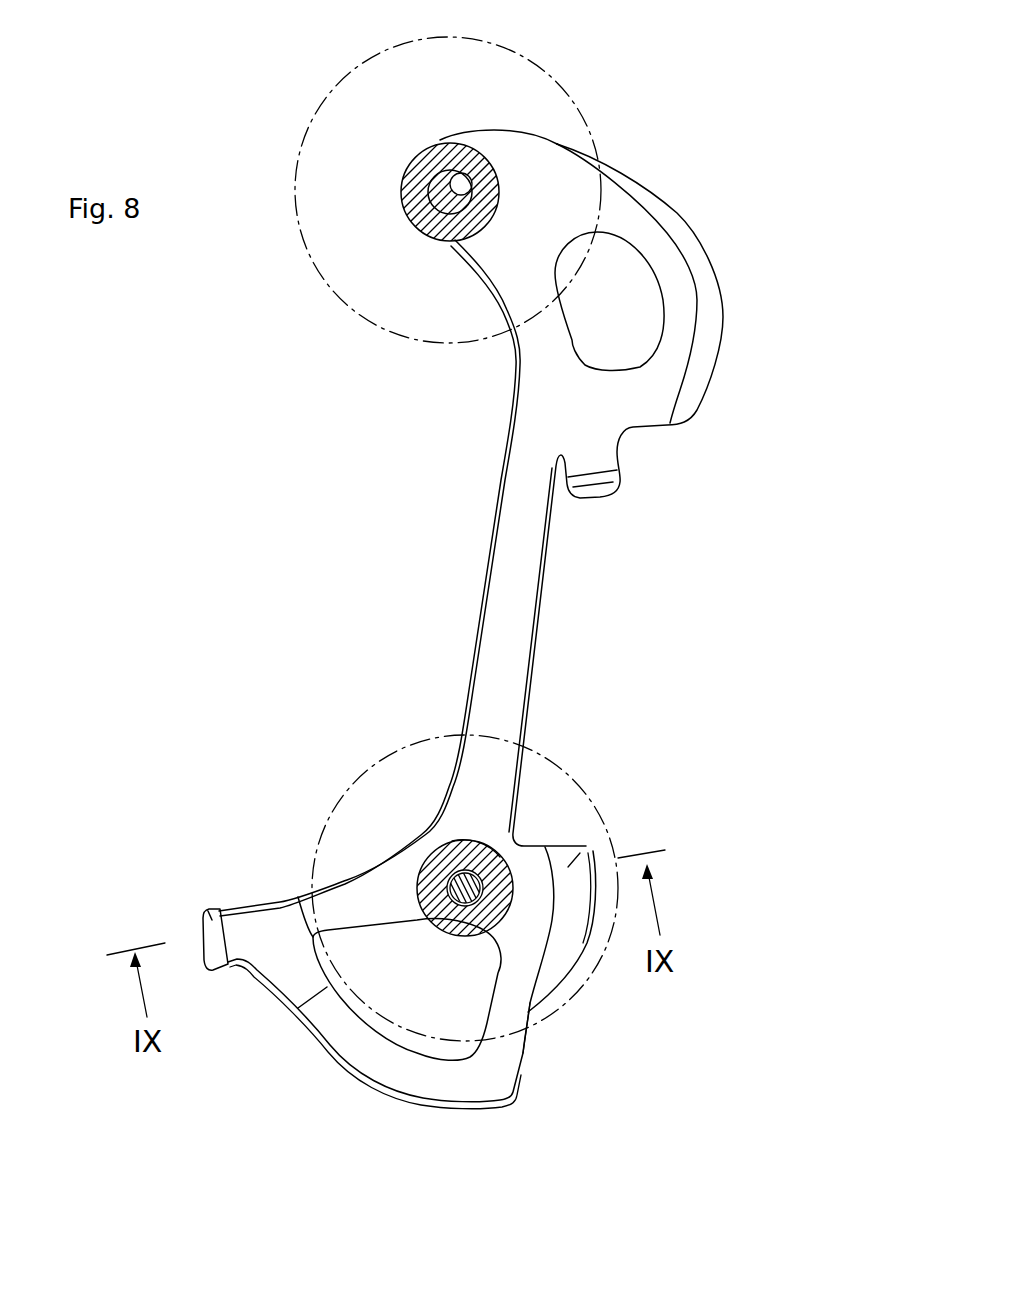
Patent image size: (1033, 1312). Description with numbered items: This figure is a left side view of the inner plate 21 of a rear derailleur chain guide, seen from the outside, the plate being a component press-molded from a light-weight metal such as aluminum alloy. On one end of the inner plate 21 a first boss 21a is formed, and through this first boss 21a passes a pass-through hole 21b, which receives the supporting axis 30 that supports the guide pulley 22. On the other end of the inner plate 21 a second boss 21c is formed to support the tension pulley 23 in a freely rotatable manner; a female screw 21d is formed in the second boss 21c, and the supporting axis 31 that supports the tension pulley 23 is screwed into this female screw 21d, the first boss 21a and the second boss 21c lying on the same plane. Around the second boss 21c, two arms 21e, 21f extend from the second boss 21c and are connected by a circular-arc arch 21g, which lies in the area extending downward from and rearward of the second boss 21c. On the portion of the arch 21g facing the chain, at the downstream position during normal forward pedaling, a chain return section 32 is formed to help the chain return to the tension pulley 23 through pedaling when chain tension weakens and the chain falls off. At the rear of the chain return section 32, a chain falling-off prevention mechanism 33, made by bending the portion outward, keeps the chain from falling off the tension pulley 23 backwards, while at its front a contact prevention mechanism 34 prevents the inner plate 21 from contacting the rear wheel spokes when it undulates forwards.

The inner plate 21 is at (578, 628).
The first boss 21a is at (456, 160).
The pass-through hole 21b is at (476, 196).
The second boss 21c is at (497, 860).
The female screw 21d is at (490, 901).
The arm 21e is at (348, 907).
The arm 21f is at (510, 1003).
The arch 21g is at (358, 1044).
The guide pulley 22 is at (343, 307).
The tension pulley 23 is at (545, 762).
The supporting axis 30 is at (438, 185).
The supporting axis 31 is at (457, 883).
The chain return section 32 is at (263, 930).
The chain falling-off prevention mechanism 33 is at (203, 928).
The contact prevention mechanism 34 is at (587, 848).